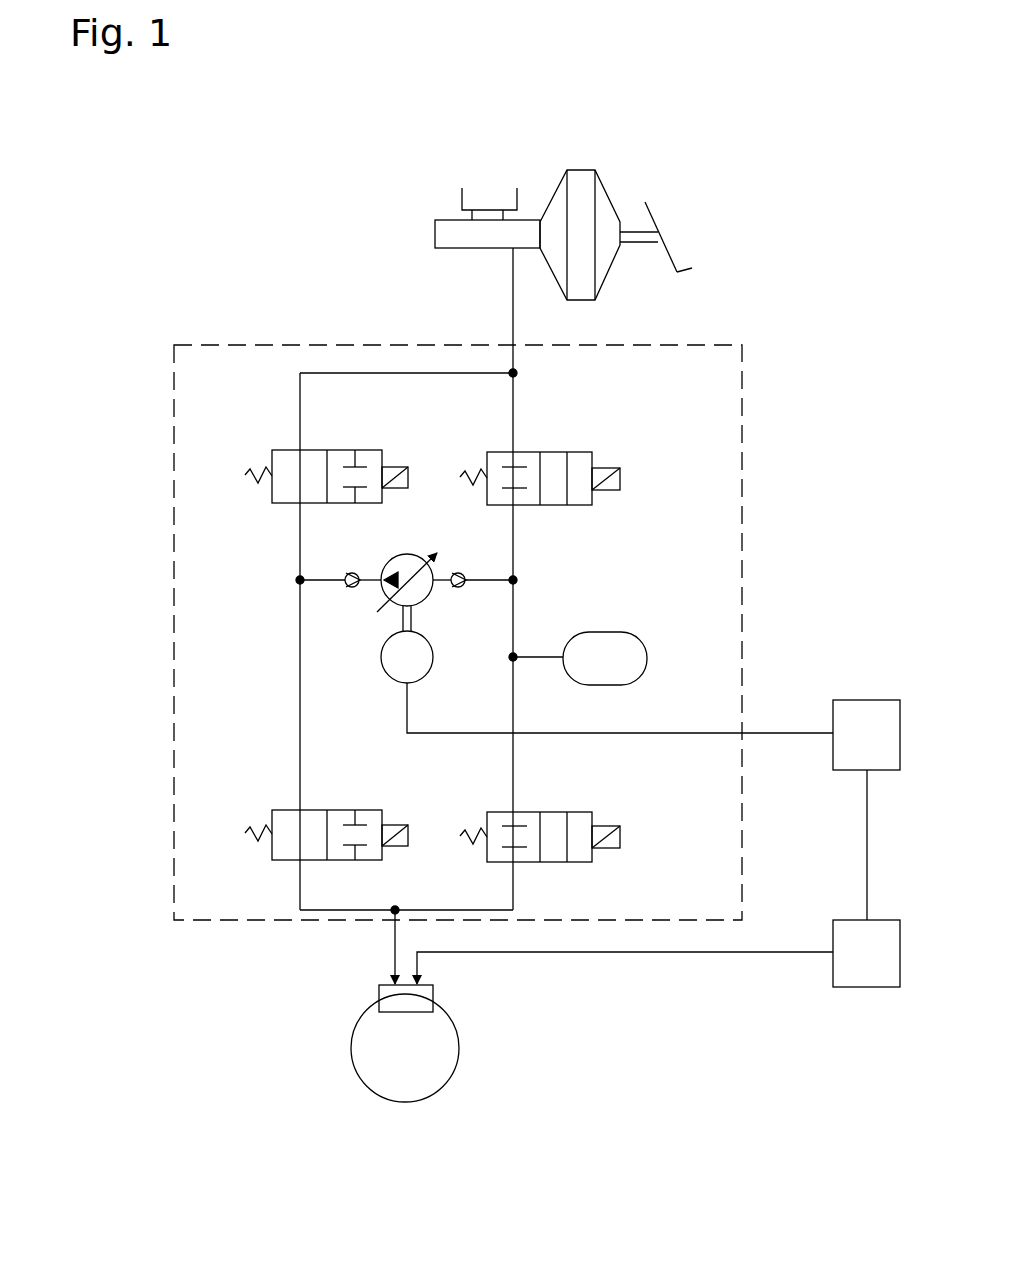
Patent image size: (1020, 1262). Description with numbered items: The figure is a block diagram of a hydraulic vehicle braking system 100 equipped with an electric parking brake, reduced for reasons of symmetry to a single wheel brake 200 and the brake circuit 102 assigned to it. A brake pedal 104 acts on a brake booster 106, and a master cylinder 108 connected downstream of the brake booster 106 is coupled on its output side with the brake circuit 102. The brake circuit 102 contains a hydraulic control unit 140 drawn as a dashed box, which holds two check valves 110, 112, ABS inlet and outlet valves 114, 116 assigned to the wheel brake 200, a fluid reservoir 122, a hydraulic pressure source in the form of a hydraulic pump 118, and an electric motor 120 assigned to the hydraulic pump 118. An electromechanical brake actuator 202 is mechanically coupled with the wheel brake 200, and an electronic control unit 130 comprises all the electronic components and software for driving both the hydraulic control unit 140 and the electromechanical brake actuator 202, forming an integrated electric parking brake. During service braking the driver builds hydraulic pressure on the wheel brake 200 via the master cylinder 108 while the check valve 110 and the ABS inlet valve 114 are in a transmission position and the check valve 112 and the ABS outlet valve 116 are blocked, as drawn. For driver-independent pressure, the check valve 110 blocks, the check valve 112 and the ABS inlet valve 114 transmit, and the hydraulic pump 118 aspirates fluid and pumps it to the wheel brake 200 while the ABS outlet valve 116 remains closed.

The vehicle braking system 100 is at (130, 187).
The brake circuit 102 is at (484, 579).
The brake pedal 104 is at (650, 213).
The brake booster 106 is at (580, 183).
The master cylinder 108 is at (455, 238).
The check valve 110 is at (337, 450).
The check valve 112 is at (570, 452).
The ABS inlet valve 114 is at (375, 793).
The ABS outlet valve 116 is at (557, 812).
The hydraulic pump 118 is at (396, 553).
The electric motor 120 is at (386, 670).
The fluid reservoir 122 is at (615, 632).
The electronic control unit 130 is at (866, 792).
The hydraulic control unit 140 is at (428, 632).
The wheel brake 200 is at (354, 1018).
The electromechanical brake actuator 202 is at (658, 977).